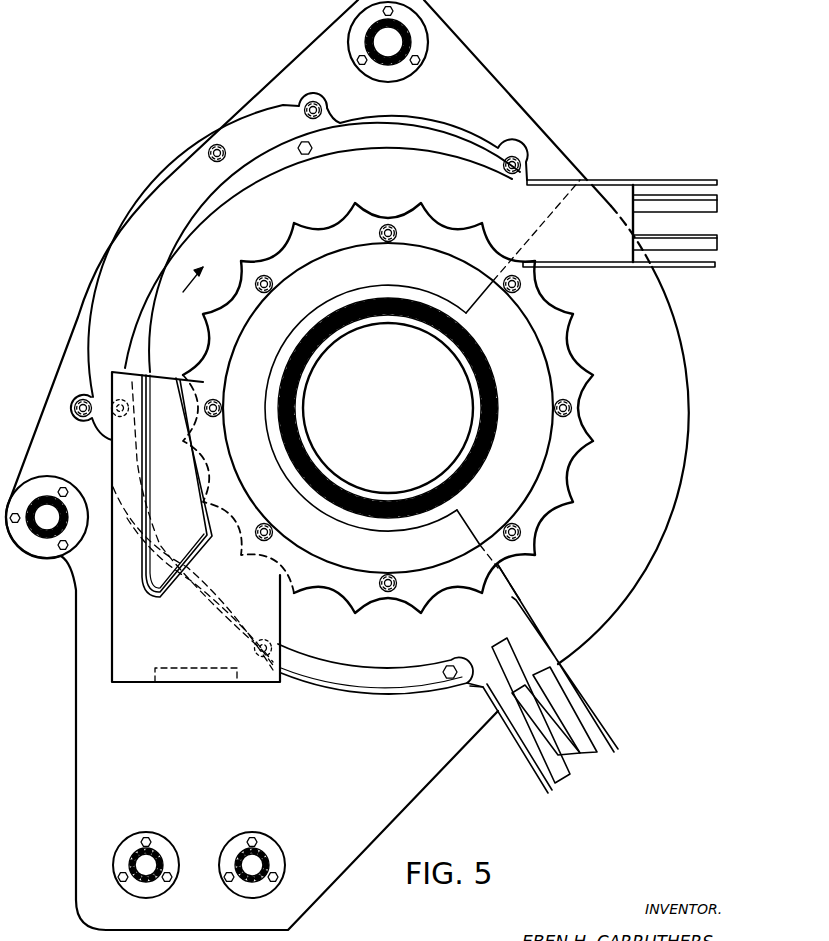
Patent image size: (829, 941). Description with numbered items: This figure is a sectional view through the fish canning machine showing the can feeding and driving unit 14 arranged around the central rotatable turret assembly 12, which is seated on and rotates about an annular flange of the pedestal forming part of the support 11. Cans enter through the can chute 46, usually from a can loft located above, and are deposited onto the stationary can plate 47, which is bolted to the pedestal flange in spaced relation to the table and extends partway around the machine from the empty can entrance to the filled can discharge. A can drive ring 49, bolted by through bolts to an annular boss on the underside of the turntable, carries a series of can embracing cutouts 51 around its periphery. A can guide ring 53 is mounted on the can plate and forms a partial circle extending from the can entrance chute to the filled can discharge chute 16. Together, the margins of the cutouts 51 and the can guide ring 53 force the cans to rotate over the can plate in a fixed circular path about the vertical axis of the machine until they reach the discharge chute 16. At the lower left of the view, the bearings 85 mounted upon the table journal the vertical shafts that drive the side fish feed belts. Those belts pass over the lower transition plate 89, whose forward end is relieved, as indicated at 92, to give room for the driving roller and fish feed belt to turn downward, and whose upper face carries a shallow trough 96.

The support 11 is at (322, 472).
The rotatable turret assembly 12 is at (498, 364).
The can feeding and driving unit 14 is at (521, 577).
The filled can discharge chute 16 is at (590, 180).
The can chute 46 is at (542, 747).
The stationary can plate 47 is at (508, 623).
The can drive ring 49 is at (331, 578).
The can embracing cutouts 51 is at (335, 594).
The can guide ring 53 is at (333, 675).
The bearings 85 is at (231, 841).
The lower transition plate 89 is at (112, 622).
The relieved portion of lower transition plate 92 is at (200, 682).
The shallow trough 96 is at (157, 397).